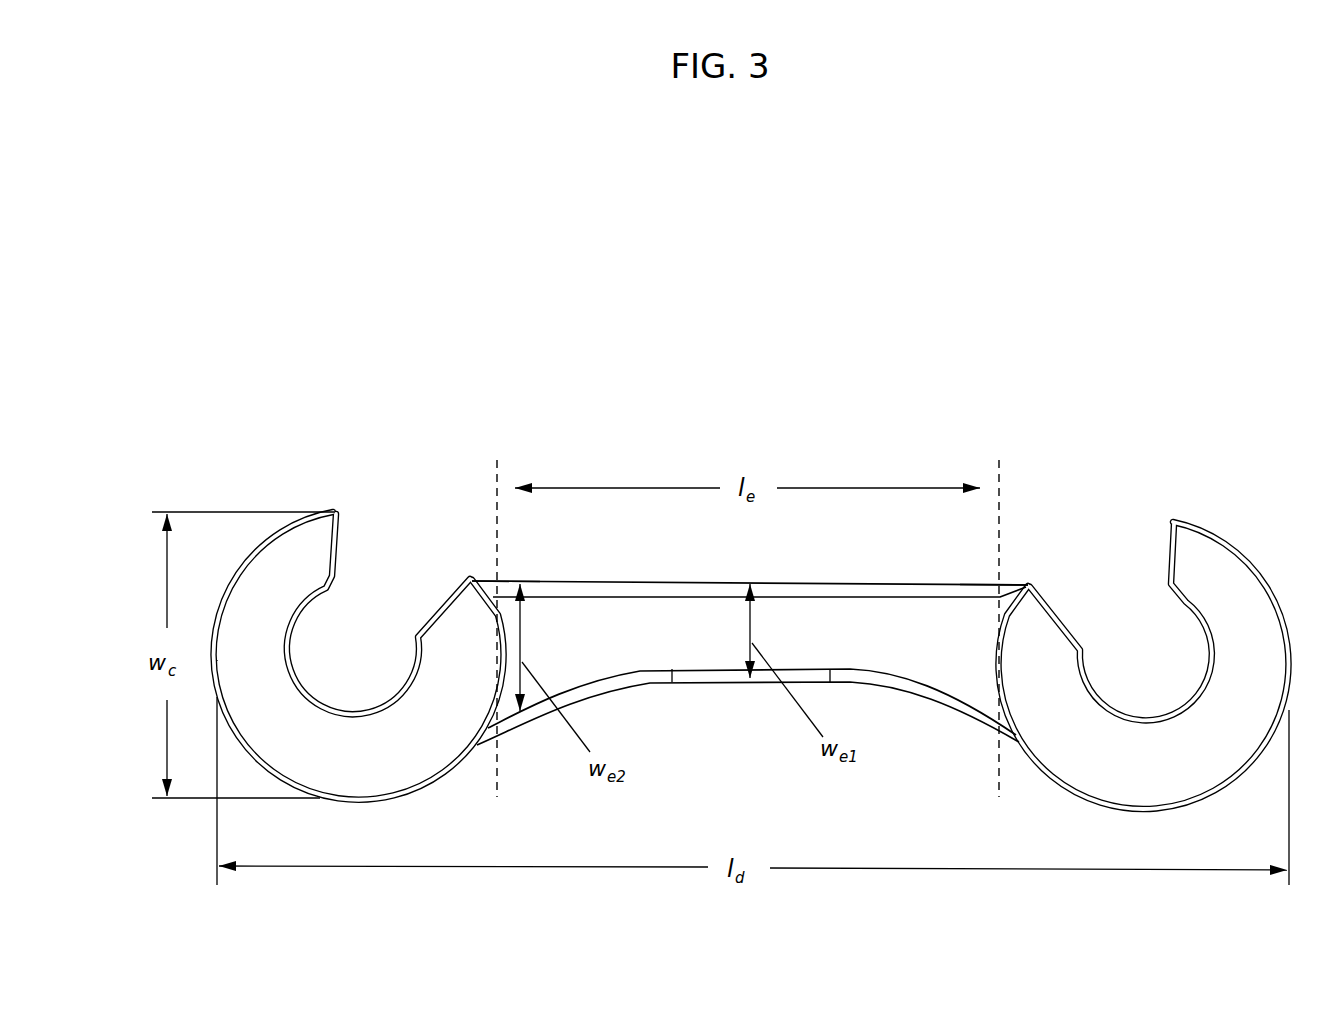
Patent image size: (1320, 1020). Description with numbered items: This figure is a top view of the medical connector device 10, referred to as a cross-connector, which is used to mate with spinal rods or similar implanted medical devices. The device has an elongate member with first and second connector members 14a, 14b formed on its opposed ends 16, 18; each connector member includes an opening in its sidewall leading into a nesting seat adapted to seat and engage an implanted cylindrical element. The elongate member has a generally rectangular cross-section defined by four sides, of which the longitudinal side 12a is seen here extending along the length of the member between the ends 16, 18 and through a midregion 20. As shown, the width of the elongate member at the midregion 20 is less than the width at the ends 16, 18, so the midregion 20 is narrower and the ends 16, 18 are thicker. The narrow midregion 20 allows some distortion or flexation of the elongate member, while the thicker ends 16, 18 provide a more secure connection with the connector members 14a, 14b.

The medical connector device 10 is at (240, 211).
The side 12a is at (698, 640).
The first connector member 14a is at (475, 415).
The second connector member 14b is at (1029, 418).
The end 16 is at (501, 578).
The end 18 is at (1004, 576).
The midregion 20 is at (750, 576).